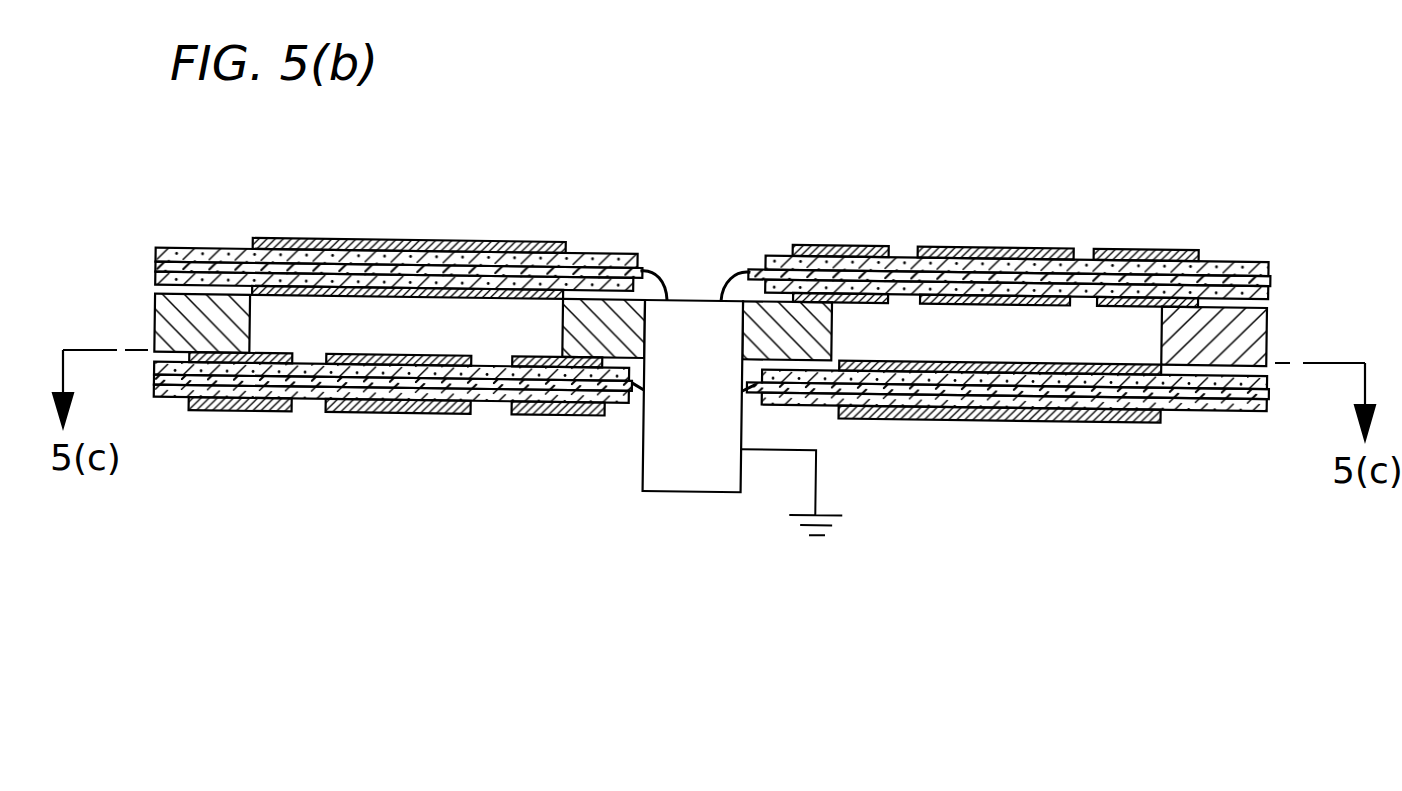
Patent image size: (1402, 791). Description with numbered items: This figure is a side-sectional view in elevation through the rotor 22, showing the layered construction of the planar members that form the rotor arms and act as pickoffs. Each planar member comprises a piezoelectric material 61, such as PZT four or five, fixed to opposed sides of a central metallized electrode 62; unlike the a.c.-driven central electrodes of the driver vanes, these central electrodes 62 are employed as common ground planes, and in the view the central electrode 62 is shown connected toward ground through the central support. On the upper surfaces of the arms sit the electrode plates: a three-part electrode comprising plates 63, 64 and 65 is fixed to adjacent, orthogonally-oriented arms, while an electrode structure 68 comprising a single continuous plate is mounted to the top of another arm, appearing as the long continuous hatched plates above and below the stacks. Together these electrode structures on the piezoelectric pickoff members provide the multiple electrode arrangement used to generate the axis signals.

The rotor 22 is at (668, 145).
The piezoelectric material 61 is at (153, 253).
The central metallized electrode 62 is at (153, 262).
The plate 63 is at (815, 233).
The plate 64 is at (998, 250).
The plate 65 is at (1143, 236).
The electrode structure 68 is at (438, 240).